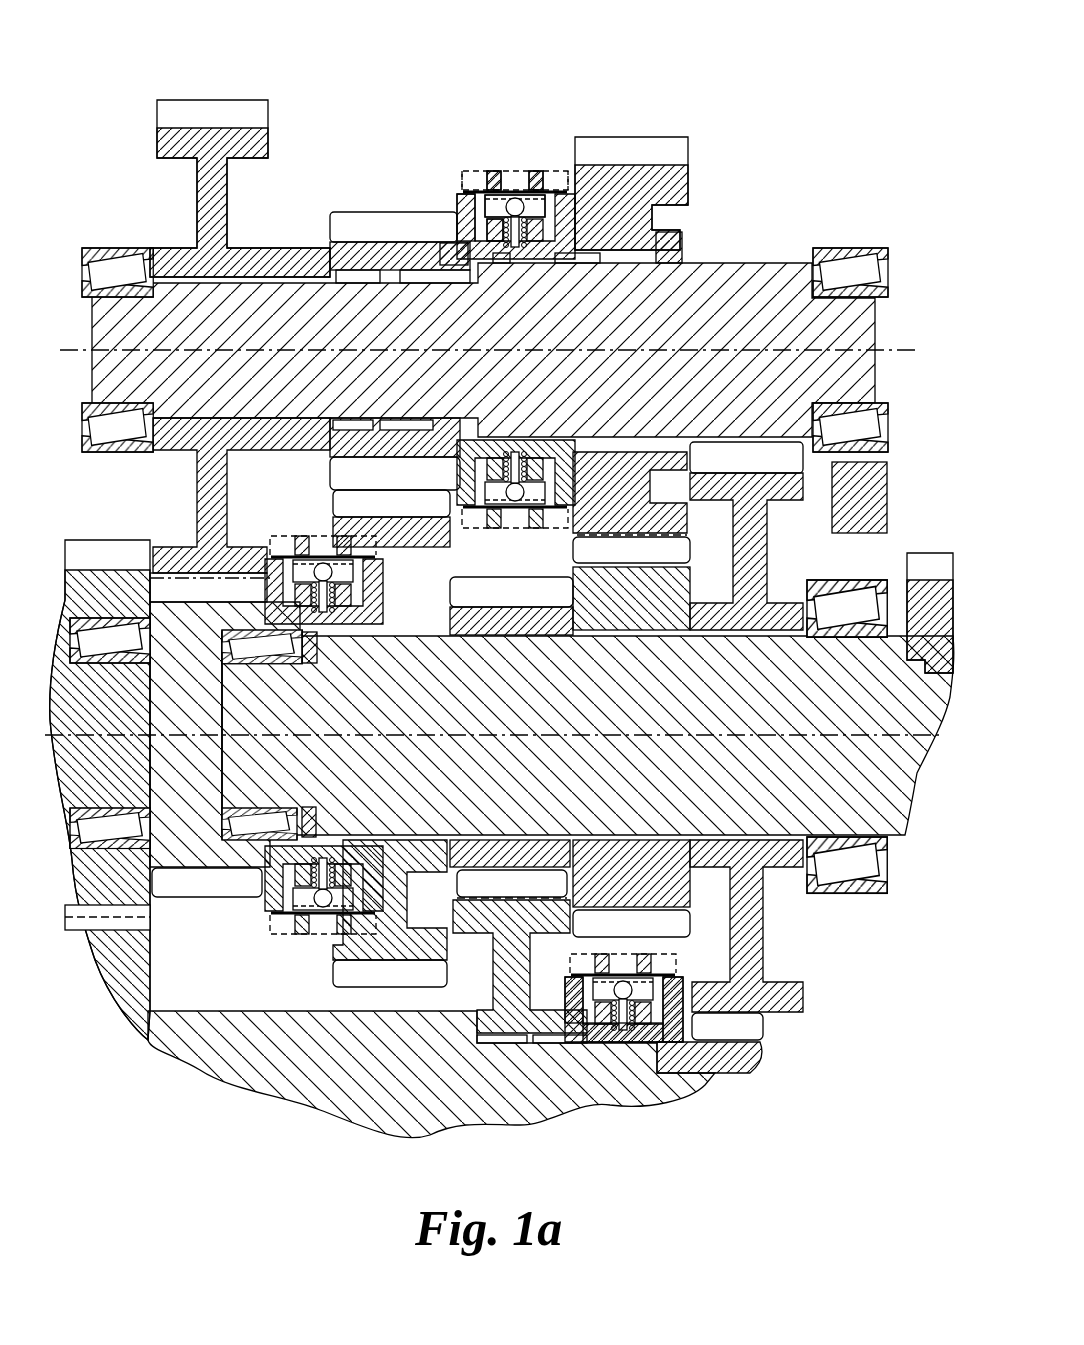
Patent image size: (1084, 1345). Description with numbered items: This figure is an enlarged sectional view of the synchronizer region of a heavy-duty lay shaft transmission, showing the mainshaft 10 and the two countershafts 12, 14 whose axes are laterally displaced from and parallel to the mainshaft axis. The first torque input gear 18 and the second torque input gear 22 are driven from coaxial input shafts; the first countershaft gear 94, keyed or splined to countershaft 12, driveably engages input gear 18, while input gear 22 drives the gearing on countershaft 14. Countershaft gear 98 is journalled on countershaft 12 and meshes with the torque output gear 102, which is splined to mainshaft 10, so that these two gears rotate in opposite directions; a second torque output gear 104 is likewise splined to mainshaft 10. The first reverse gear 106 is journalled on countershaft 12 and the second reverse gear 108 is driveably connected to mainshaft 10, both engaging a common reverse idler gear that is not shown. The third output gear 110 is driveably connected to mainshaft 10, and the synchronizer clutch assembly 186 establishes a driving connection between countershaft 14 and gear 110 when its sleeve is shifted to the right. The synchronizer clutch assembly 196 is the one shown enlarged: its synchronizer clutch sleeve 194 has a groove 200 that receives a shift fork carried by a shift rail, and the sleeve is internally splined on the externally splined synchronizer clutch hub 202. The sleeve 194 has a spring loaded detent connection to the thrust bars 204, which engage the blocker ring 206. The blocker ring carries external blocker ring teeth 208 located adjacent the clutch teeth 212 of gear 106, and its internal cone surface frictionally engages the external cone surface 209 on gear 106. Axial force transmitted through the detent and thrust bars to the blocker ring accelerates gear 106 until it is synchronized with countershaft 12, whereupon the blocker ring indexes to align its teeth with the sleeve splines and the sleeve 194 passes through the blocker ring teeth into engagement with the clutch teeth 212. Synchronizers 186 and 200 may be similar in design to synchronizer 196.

The mainshaft 10 is at (651, 697).
The countershaft 12 is at (629, 317).
The countershaft 14 is at (462, 1087).
The first torque input gear 18 is at (187, 617).
The second torque input gear 22 is at (95, 552).
The first countershaft gear 94 is at (215, 110).
The countershaft gear 98 is at (612, 178).
The torque output gear 102 is at (667, 590).
The torque output gear 104 is at (765, 552).
The first reverse gear 106 is at (352, 222).
The second reverse gear 108 is at (340, 972).
The third output gear 110 is at (490, 595).
The synchronizer clutch assembly 186 is at (688, 971).
The synchronizer clutch sleeve 194 is at (497, 187).
The synchronizer clutch assembly 196 is at (540, 166).
The groove 200 is at (517, 187).
The synchronizer clutch hub 202 is at (490, 232).
The thrust bars 204 is at (487, 183).
The blocker ring 206 is at (338, 478).
The blocker ring teeth 208 is at (478, 190).
The external cone surface 209 is at (492, 478).
The clutch teeth 212 is at (490, 210).